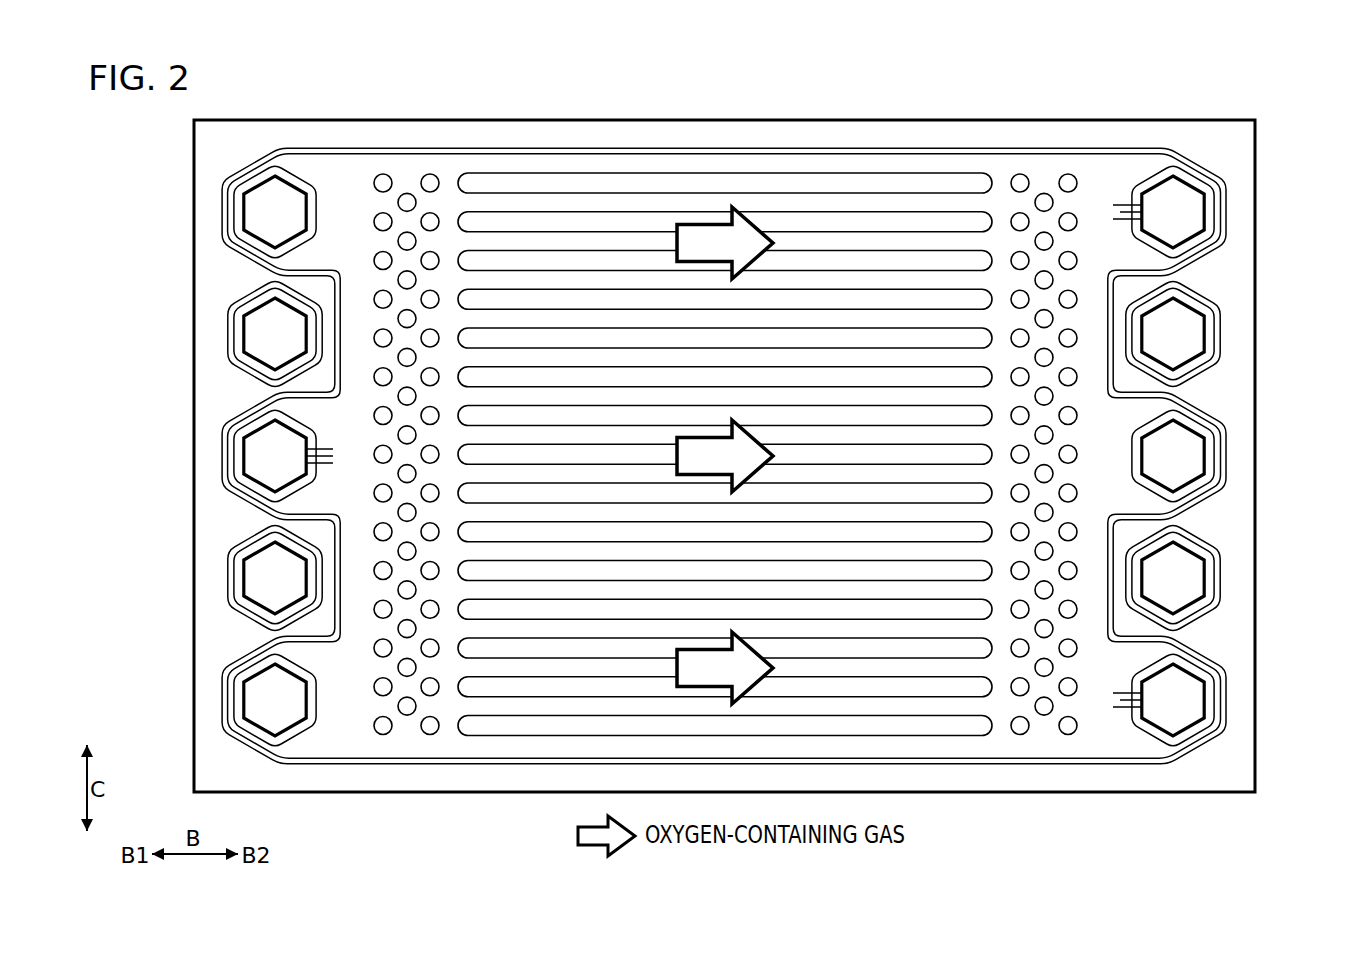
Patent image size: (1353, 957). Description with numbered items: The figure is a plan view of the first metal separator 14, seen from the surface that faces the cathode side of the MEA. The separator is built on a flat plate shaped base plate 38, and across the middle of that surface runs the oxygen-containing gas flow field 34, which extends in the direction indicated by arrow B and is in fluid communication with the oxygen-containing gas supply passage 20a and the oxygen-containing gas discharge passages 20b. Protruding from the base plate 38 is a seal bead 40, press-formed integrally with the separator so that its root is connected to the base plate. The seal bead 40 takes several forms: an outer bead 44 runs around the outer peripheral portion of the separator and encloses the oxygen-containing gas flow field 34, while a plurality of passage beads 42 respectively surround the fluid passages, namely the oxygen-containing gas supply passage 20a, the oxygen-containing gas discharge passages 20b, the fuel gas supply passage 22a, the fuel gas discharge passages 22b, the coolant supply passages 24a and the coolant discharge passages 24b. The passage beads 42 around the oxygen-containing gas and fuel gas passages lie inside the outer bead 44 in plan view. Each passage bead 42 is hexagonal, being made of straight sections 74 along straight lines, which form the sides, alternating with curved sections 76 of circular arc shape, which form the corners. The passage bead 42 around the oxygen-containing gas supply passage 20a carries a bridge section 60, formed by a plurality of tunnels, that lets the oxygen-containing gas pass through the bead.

The first metal separator 14 is at (724, 425).
The base plate 38 is at (483, 136).
The seal bead 40 is at (625, 146).
The outer bead 44 is at (725, 401).
The oxygen-containing gas flow field 34 is at (860, 243).
The bridge section 60 is at (337, 444).
The straight sections 74 is at (306, 162).
The curved sections 76 is at (320, 232).
The passage beads 42 is at (722, 452).
The oxygen-containing gas supply passage 20a is at (255, 455).
The oxygen-containing gas discharge passages 20b is at (1195, 208).
The fuel gas supply passage 22a is at (1195, 455).
The fuel gas discharge passages 22b is at (255, 213).
The coolant supply passages 24a is at (255, 335).
The coolant discharge passages 24b is at (1195, 330).